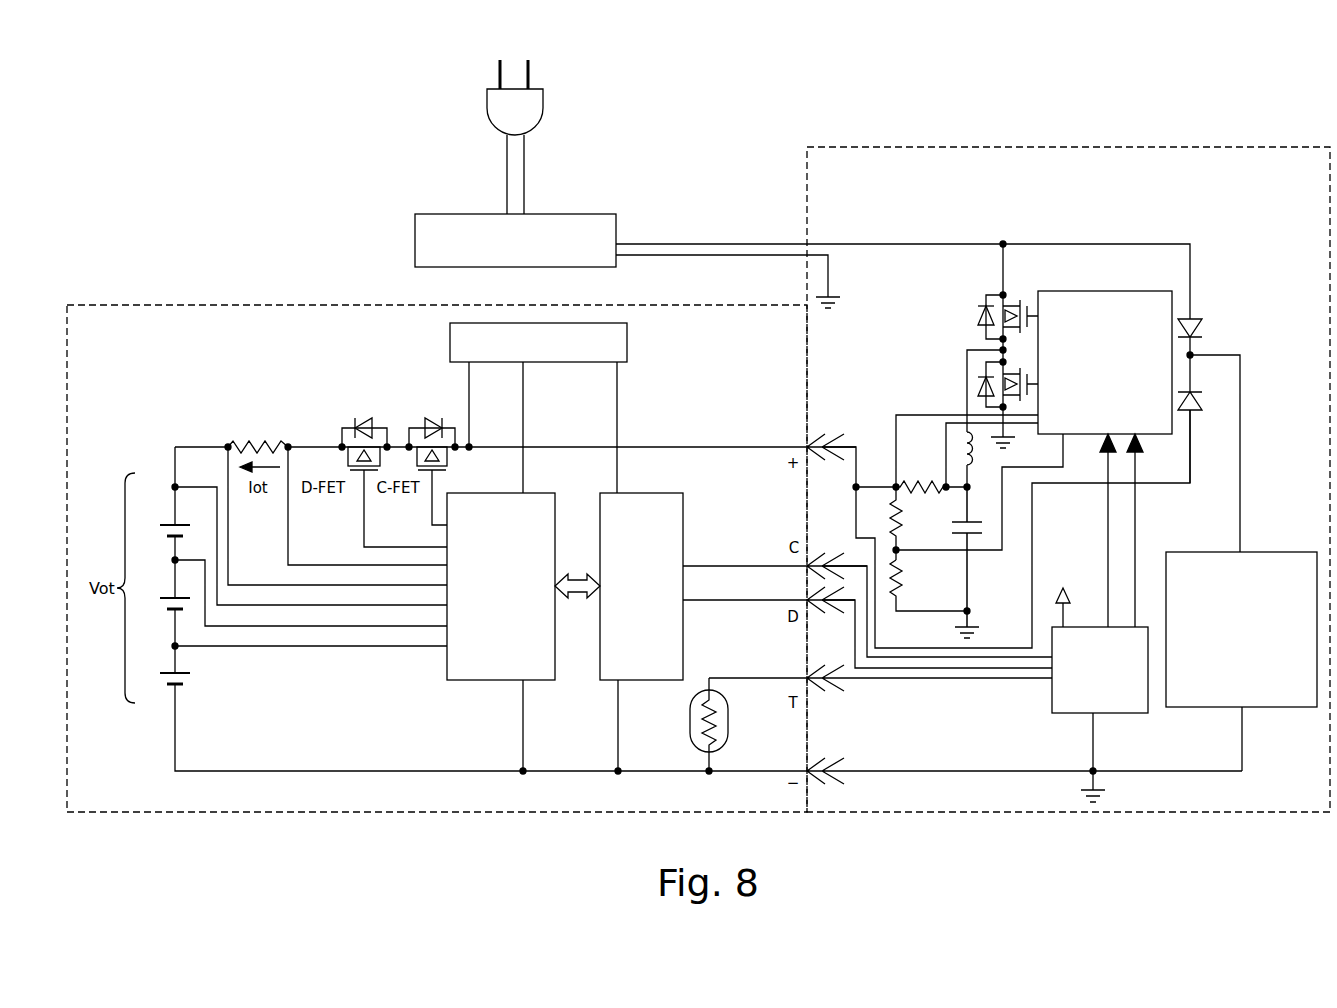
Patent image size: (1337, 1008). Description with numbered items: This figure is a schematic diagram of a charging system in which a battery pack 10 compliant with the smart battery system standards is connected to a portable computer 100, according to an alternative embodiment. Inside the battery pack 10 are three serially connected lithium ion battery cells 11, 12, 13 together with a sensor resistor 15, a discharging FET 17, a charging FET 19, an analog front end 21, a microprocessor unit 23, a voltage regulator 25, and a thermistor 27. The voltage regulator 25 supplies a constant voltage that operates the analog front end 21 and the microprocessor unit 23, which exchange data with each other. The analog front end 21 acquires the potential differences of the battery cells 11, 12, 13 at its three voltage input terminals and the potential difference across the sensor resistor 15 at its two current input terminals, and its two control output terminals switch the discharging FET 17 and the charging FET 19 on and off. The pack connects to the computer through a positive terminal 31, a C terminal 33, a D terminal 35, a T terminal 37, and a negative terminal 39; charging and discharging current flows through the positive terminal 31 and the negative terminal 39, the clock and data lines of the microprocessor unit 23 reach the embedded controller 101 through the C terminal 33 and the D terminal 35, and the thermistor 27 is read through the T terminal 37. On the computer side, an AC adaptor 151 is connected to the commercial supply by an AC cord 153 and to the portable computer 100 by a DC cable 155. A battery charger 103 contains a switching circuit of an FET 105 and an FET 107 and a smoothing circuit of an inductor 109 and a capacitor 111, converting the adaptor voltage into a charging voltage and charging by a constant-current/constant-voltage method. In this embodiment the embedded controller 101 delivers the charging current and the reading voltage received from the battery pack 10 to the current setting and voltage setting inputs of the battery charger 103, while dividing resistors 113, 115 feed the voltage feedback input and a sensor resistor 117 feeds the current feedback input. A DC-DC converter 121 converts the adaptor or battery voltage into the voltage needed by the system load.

The battery pack 10 is at (102, 352).
The portable computer 100 is at (822, 192).
The battery cell 11 is at (172, 675).
The battery cell 12 is at (172, 600).
The battery cell 13 is at (172, 526).
The sensor resistor 15 is at (260, 443).
The discharging FET 17 is at (366, 425).
The charging FET 19 is at (433, 425).
The analog front end 21 is at (447, 676).
The microprocessor unit 23 is at (600, 675).
The voltage regulator 25 is at (450, 338).
The thermistor 27 is at (690, 716).
The positive terminal 31 is at (822, 436).
The C terminal 33 is at (829, 556).
The D terminal 35 is at (827, 610).
The T terminal 37 is at (836, 688).
The negative terminal 39 is at (814, 782).
The embedded controller 101 is at (1052, 706).
The battery charger 103 is at (1110, 291).
The FET 105 is at (976, 318).
The FET 107 is at (980, 385).
The inductor 109 is at (958, 432).
The capacitor 111 is at (975, 540).
The dividing resistor 113 is at (902, 516).
The dividing resistor 115 is at (900, 580).
The sensor resistor 117 is at (928, 481).
The DC-DC converter 121 is at (1258, 707).
The AC adaptor 151 is at (434, 214).
The AC cord 153 is at (507, 163).
The DC cable 155 is at (748, 244).